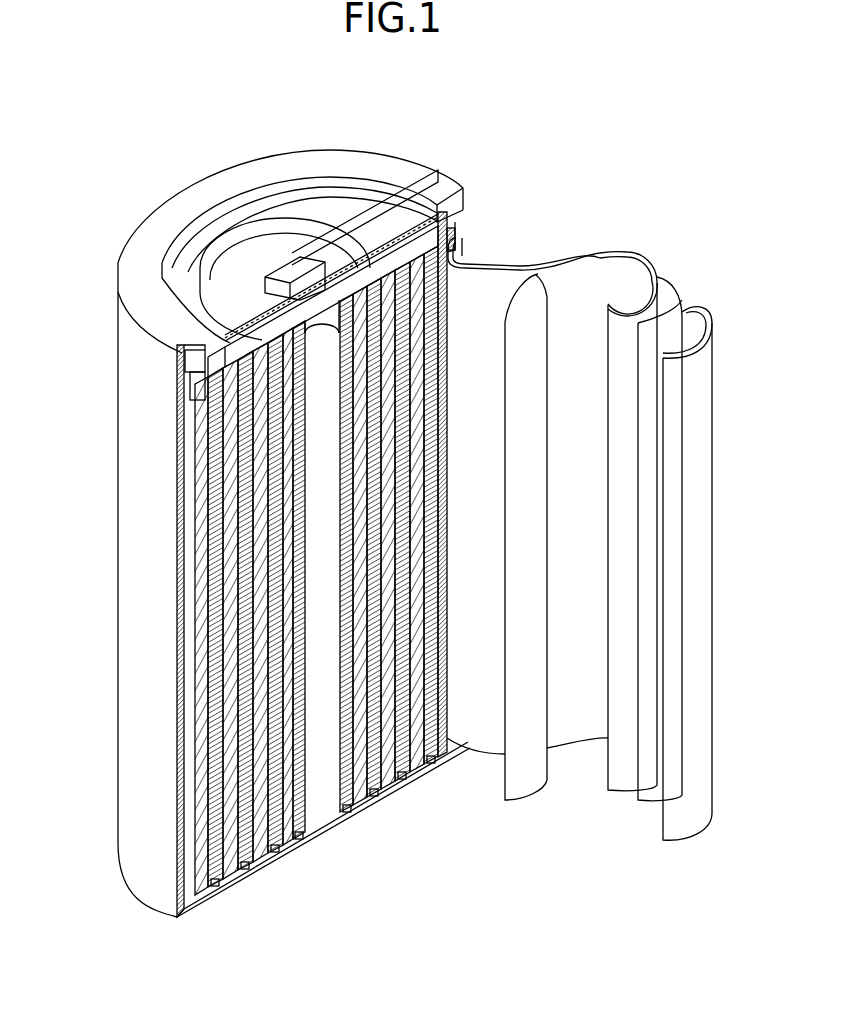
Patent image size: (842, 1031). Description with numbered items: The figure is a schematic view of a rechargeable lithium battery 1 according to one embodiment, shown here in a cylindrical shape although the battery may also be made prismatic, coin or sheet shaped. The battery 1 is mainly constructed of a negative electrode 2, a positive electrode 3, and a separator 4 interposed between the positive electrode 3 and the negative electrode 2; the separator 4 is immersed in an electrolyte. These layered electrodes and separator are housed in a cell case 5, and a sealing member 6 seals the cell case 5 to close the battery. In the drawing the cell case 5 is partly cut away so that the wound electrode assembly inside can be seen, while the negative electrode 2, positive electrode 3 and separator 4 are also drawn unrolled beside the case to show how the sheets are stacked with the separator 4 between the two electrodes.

The rechargeable lithium battery 1 is at (660, 228).
The negative electrode 2 is at (695, 420).
The positive electrode 3 is at (623, 320).
The separator 4 is at (670, 335).
The cell case 5 is at (144, 738).
The sealing member 6 is at (300, 222).